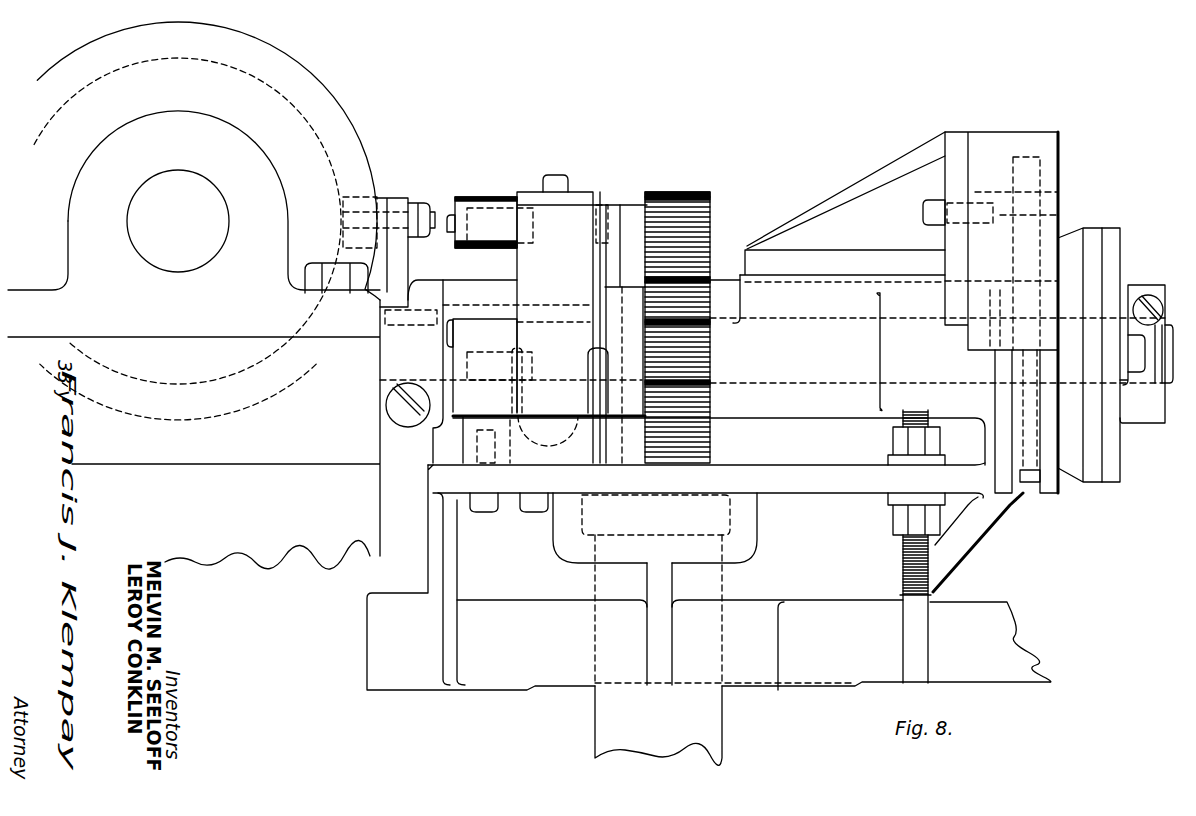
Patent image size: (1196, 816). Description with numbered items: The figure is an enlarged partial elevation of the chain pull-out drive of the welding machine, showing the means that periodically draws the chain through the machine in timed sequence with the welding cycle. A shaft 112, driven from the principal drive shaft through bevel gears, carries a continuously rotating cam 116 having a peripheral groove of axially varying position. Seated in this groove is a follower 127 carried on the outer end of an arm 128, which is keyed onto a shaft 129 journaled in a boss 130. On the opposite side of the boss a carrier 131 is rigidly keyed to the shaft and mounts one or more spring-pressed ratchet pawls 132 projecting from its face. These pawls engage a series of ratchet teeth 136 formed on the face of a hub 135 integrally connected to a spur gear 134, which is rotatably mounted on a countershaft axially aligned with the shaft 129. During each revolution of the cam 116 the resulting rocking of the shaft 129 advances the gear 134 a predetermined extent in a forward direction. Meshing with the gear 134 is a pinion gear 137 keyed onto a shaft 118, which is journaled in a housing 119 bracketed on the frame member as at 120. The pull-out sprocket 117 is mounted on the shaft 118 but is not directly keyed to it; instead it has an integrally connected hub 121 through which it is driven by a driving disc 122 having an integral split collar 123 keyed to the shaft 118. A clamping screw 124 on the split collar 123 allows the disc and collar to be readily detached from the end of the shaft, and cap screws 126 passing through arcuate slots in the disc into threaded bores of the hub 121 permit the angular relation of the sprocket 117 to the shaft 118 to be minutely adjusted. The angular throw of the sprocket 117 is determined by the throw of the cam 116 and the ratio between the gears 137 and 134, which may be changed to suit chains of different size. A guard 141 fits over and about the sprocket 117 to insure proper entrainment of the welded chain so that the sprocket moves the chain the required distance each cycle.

The shaft 112 is at (215, 258).
The cam 116 is at (298, 78).
The pull-out sprocket 117 is at (1037, 497).
The shaft 118 is at (800, 330).
The housing 119 is at (837, 297).
The bracket 120 is at (903, 582).
The hub 121 is at (1090, 473).
The driving disc 122 is at (1108, 475).
The split collar 123 is at (1150, 415).
The clamping screw 124 is at (1168, 320).
The cap screws 126 is at (1143, 307).
The follower 127 is at (360, 202).
The arm 128 is at (403, 200).
The shaft 129 is at (373, 365).
The boss 130 is at (467, 295).
The carrier 131 is at (530, 257).
The ratchet pawls 132 is at (598, 235).
The spur gear 134 is at (710, 200).
The hub 135 is at (634, 215).
The ratchet teeth 136 is at (609, 200).
The pinion gear 137 is at (712, 262).
The guard 141 is at (1000, 143).